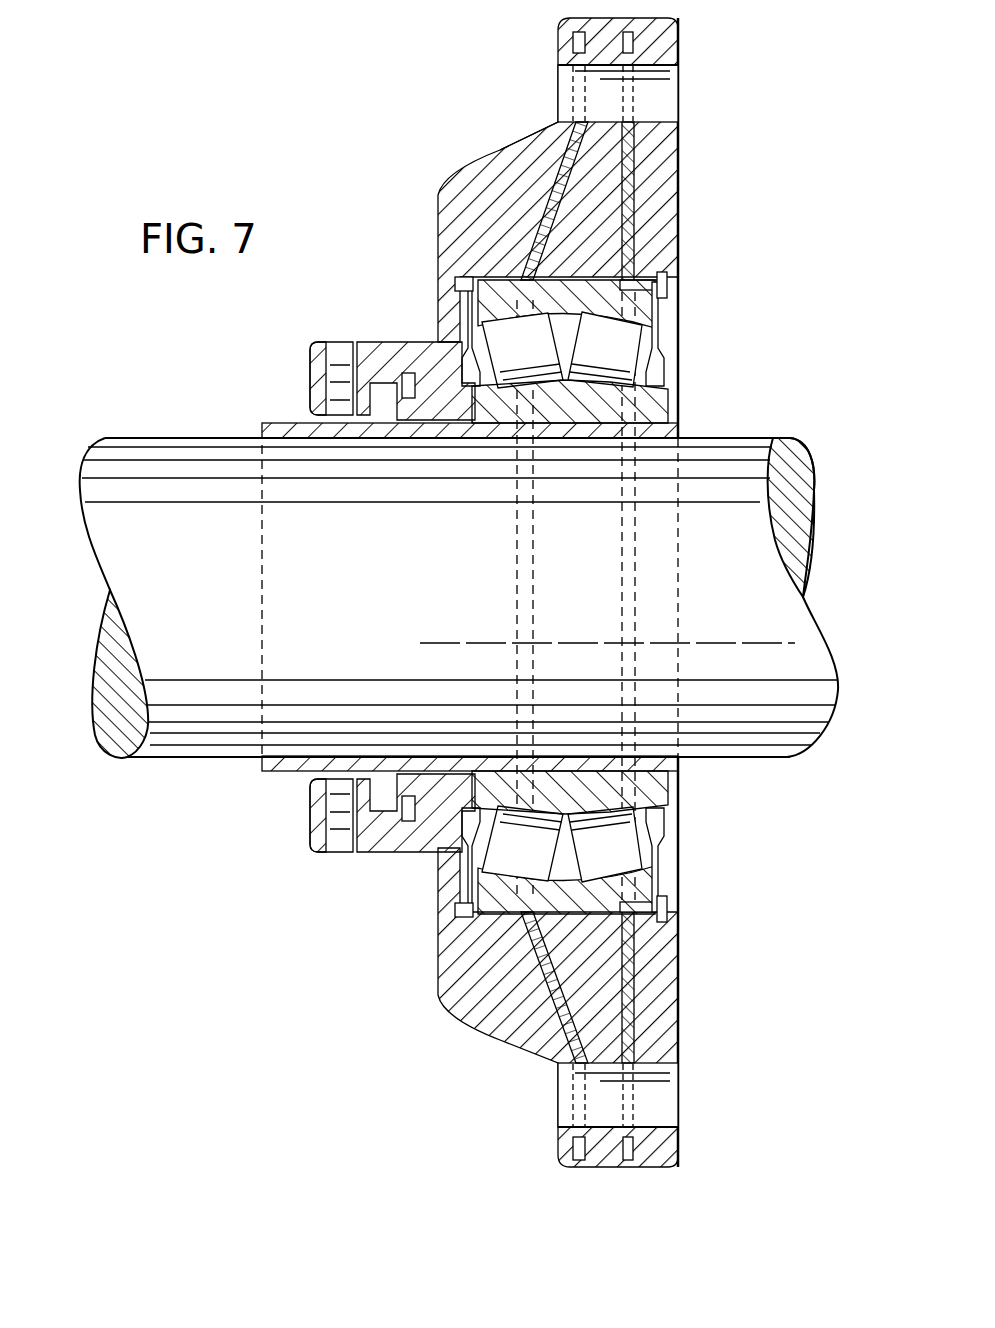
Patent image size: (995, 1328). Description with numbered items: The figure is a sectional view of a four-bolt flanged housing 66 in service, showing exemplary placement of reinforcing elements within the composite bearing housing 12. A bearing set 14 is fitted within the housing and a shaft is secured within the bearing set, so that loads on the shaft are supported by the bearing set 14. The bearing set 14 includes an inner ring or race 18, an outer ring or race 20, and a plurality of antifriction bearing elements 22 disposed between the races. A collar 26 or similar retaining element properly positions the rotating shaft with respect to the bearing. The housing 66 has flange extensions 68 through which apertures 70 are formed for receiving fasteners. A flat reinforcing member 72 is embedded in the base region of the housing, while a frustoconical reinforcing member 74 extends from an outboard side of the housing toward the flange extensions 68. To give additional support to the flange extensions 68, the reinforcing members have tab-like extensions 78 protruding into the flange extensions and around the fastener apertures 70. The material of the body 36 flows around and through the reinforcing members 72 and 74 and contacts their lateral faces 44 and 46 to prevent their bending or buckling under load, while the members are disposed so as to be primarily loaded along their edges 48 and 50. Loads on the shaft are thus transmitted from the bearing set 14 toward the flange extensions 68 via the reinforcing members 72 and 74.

The composite bearing housing 12 is at (107, 489).
The bearing set 14 is at (679, 374).
The inner ring or race 18 is at (652, 417).
The outer ring or race 20 is at (658, 300).
The antifriction bearing elements 22 is at (615, 348).
The collar 26 is at (312, 362).
The body 36 is at (660, 948).
The lateral face 44 is at (612, 992).
The lateral face 46 is at (638, 972).
The edge 48 is at (625, 148).
The edge 50 is at (455, 280).
The four-bolt flanged housing 66 is at (296, 848).
The flange extensions 68 is at (663, 40).
The apertures 70 is at (667, 104).
The flat reinforcing member 72 is at (634, 228).
The frustoconical reinforcing member 74 is at (538, 240).
The tab-like extension 78 is at (645, 1150).